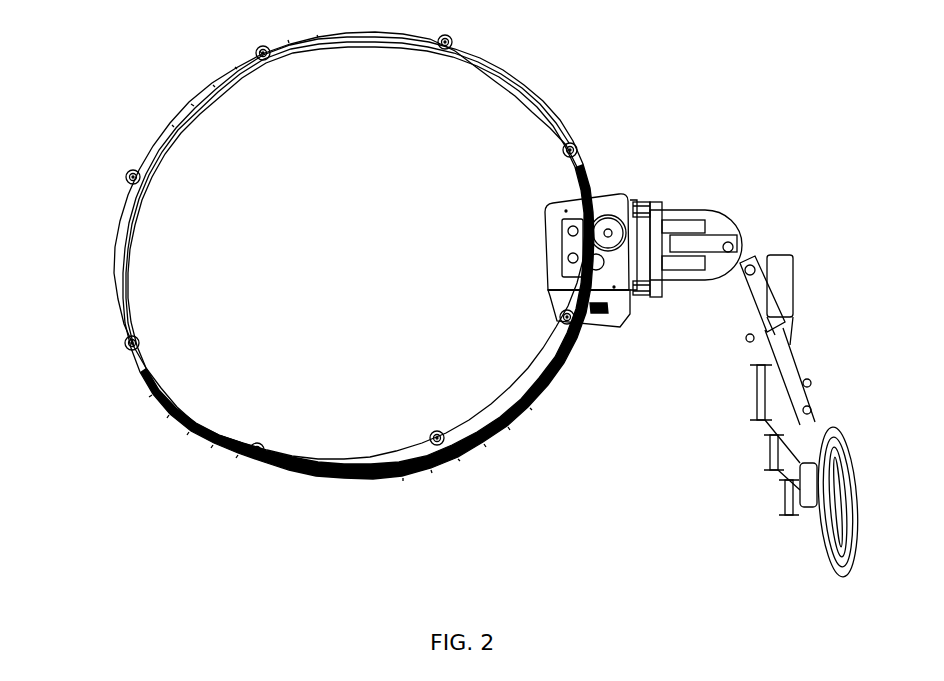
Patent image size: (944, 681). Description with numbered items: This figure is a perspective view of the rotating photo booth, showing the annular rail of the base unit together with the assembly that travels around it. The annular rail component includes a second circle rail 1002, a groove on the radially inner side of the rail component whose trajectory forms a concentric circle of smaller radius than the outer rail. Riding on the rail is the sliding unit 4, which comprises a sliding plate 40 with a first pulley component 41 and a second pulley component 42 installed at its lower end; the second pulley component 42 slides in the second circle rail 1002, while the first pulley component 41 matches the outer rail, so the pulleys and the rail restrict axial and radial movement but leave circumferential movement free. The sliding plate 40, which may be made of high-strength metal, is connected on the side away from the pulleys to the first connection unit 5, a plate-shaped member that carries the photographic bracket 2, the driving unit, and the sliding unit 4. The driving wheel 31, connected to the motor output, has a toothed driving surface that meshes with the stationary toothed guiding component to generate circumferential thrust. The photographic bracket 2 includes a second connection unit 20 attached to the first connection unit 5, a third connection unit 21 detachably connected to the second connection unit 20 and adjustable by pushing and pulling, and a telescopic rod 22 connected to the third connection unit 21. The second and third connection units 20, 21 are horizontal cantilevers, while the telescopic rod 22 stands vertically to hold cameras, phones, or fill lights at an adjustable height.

The second circle rail 1002 is at (305, 53).
The photographic bracket 2 is at (450, 313).
The sliding unit 4 is at (533, 310).
The first connection unit 5 is at (552, 290).
The second connection unit 20 is at (655, 203).
The third connection unit 21 is at (705, 208).
The telescopic rod 22 is at (793, 352).
The driving wheel 31 is at (606, 216).
The sliding plate 40 is at (573, 250).
The first pulley component 41 is at (645, 300).
The second pulley component 42 is at (556, 256).